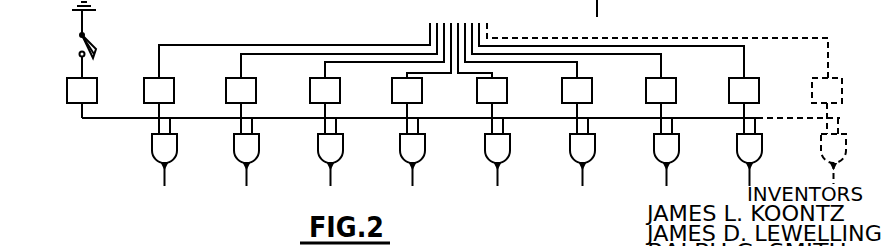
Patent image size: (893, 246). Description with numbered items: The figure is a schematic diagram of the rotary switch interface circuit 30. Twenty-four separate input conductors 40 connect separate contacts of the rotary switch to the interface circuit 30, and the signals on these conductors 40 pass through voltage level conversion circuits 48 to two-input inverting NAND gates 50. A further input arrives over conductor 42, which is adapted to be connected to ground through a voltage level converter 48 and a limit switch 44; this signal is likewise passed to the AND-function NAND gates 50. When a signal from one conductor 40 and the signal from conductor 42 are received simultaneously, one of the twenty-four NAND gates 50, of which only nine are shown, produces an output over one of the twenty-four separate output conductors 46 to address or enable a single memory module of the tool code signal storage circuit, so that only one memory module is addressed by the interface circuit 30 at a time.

The rotary switch interface circuit 30 is at (275, 45).
The input conductors 40 is at (428, 32).
The conductor 42 is at (111, 120).
The limit switch 44 is at (86, 43).
The conductors 46 is at (499, 181).
The voltage level conversion circuit 48 is at (66, 92).
The NAND gate 50 is at (343, 153).